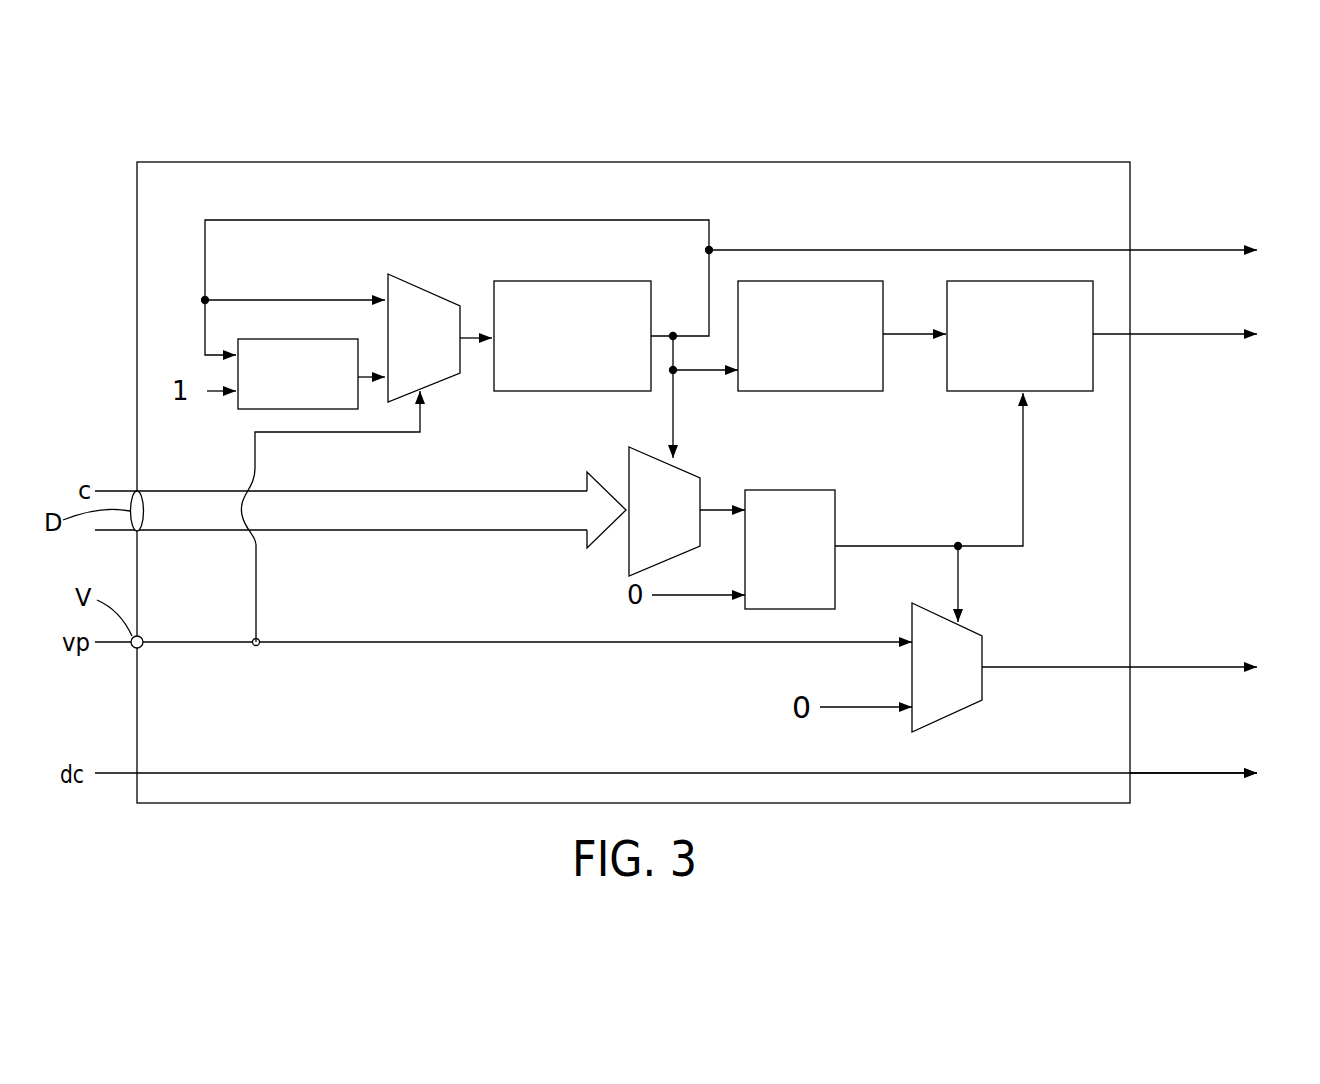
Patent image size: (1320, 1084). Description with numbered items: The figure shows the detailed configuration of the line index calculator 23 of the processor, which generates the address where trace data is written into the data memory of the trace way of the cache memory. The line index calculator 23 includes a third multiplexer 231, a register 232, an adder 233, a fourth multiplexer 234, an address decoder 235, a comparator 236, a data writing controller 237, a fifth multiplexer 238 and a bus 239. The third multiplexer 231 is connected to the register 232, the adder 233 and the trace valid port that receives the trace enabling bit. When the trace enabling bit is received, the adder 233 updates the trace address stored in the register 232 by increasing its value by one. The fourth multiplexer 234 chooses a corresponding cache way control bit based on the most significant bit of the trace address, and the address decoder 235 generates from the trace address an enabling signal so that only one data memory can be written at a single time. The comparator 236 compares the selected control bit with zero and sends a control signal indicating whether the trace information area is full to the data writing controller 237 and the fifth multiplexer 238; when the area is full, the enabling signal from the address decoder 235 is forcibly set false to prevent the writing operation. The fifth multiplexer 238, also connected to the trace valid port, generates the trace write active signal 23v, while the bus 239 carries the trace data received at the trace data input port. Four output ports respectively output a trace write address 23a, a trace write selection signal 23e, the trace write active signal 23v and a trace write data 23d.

The line index calculator 23 is at (885, 165).
The third multiplexer 231 is at (418, 288).
The register 232 is at (608, 281).
The adder 233 is at (325, 343).
The fourth multiplexer 234 is at (690, 472).
The address decoder 235 is at (857, 392).
The comparator 236 is at (795, 490).
The data writing controller 237 is at (1043, 393).
The fifth multiplexer 238 is at (970, 630).
The bus 239 is at (982, 772).
The trace write address 23a is at (1009, 250).
The trace write selection signal 23e is at (1201, 334).
The trace write active signal 23v is at (1145, 668).
The trace write data 23d is at (1219, 773).